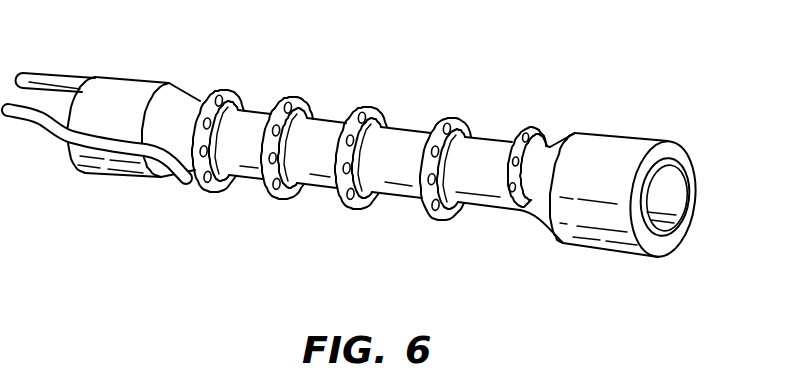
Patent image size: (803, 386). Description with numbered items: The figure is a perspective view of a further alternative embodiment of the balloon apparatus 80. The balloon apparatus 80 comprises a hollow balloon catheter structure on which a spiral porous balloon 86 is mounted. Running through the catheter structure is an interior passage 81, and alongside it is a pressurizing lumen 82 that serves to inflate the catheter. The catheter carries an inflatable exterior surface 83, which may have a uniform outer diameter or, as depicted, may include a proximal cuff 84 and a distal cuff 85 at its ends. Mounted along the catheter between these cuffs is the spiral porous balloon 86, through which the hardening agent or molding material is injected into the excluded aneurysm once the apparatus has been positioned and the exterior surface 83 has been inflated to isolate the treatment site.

The balloon apparatus 80 is at (481, 59).
The interior passage 81 is at (677, 194).
The pressurizing lumen 82 is at (40, 71).
The inflatable exterior surface 83 is at (410, 180).
The proximal cuff 84 is at (638, 142).
The distal cuff 85 is at (137, 76).
The spiral porous balloon 86 is at (371, 105).